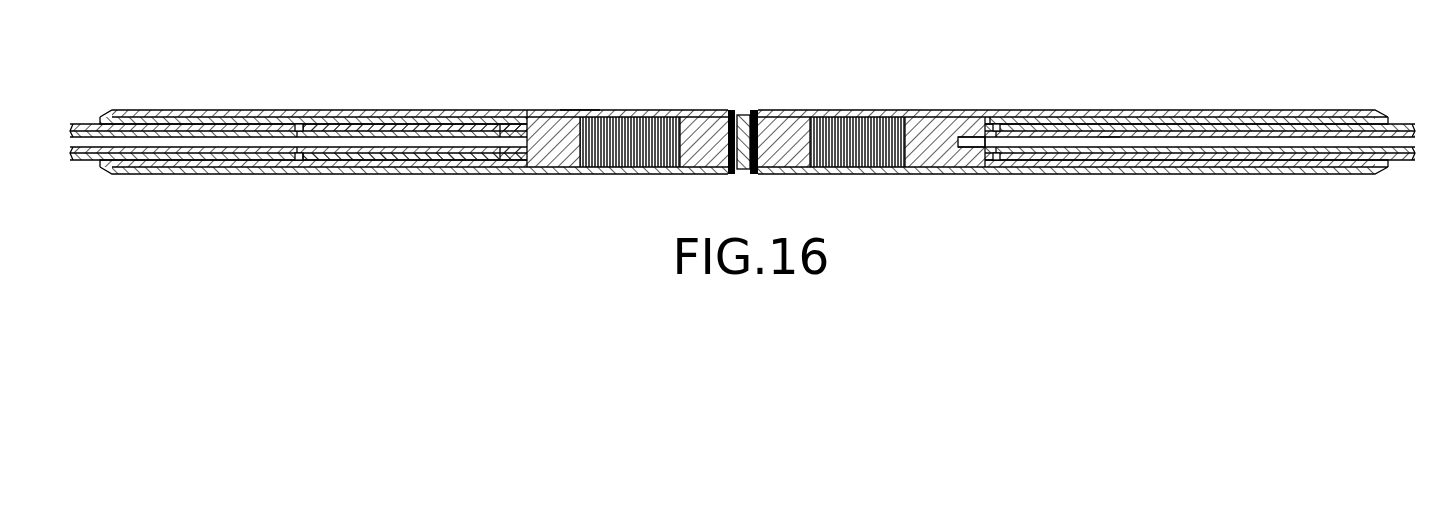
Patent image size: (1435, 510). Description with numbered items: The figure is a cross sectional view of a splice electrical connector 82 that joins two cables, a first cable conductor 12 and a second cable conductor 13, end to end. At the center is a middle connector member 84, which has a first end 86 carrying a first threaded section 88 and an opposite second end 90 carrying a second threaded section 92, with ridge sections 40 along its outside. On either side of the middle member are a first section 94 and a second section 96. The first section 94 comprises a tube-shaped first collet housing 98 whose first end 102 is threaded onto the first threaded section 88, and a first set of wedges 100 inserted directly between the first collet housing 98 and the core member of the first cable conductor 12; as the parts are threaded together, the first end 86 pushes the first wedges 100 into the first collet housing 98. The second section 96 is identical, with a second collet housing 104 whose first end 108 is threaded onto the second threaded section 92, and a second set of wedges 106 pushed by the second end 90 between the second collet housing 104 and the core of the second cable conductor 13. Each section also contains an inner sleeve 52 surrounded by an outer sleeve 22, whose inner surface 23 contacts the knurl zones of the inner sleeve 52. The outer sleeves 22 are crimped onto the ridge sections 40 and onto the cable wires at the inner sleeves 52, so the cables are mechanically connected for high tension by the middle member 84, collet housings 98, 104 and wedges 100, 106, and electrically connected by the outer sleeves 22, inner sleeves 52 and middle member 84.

The first cable conductor 12 is at (1206, 165).
The second cable conductor 13 is at (146, 156).
The outer sleeve 22 is at (240, 110).
The inner surface of the outer sleeve 23 is at (174, 168).
The ridge section 40 is at (620, 135).
The inner sleeve 52 is at (193, 119).
The splice electrical connector 82 is at (569, 88).
The middle connector member 84 is at (743, 114).
The first end of the middle connector member 86 is at (937, 135).
The first threaded section 88 is at (930, 162).
The second end of the middle connector member 90 is at (562, 148).
The second threaded section 92 is at (528, 148).
The first section 94 is at (1168, 121).
The second section 96 is at (357, 124).
The first collet housing 98 is at (1040, 166).
The first set of wedges 100 is at (1108, 140).
The first end of the first collet housing 102 is at (1028, 116).
The second collet housing 104 is at (314, 152).
The second set of wedges 106 is at (360, 160).
The first end of the second collet housing 108 is at (537, 118).